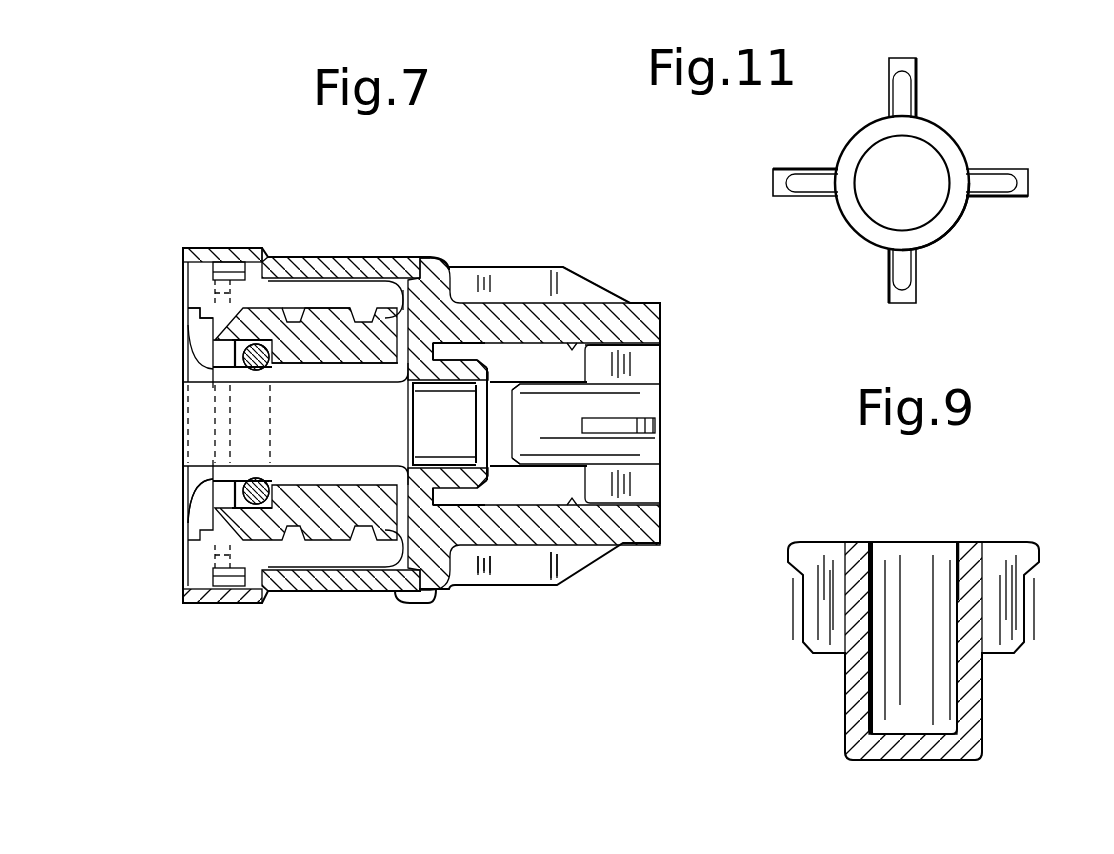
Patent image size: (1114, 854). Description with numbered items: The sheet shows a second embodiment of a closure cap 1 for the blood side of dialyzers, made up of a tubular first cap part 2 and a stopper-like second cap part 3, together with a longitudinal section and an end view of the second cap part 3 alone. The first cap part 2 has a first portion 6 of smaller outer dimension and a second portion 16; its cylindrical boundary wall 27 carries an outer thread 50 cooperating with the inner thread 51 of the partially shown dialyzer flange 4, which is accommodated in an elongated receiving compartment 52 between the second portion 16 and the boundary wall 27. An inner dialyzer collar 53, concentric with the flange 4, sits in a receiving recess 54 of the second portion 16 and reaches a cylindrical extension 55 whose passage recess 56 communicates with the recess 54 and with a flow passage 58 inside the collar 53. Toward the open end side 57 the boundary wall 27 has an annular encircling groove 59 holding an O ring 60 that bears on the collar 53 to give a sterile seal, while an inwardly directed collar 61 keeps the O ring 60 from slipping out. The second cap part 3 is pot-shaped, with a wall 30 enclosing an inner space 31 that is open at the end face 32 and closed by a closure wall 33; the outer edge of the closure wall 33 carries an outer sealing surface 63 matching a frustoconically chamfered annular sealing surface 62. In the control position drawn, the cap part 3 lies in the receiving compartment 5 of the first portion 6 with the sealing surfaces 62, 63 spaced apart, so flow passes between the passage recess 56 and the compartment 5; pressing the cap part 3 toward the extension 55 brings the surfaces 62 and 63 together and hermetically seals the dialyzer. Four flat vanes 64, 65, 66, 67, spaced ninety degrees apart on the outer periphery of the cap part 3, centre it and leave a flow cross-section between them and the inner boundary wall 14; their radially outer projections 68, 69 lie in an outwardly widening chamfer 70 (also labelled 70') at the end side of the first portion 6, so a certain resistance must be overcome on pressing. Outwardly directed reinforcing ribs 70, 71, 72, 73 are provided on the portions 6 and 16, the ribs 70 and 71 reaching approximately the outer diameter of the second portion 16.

In FIG. 7, the closure cap 1 is at (522, 266).
In FIG. 7, the first cap part 2 is at (432, 259).
In FIG. 7, the second cap part 3 is at (666, 383).
In FIG. 11, the second cap part 3 is at (970, 215).
In FIG. 9, the second cap part 3 is at (1042, 597).
In FIG. 7, the dialyzer flange 4 is at (272, 292).
In FIG. 7, the receiving compartment 5 is at (661, 304).
In FIG. 7, the first portion 6 is at (640, 527).
In FIG. 7, the inner boundary wall 14 is at (562, 370).
In FIG. 7, the second portion 16 is at (230, 597).
In FIG. 7, the boundary wall 27 is at (233, 525).
In FIG. 11, the wall 30 is at (945, 138).
In FIG. 9, the wall 30 is at (965, 545).
In FIG. 9, the inner space 31 is at (902, 655).
In FIG. 9, the end face 32 is at (880, 541).
In FIG. 7, the closure wall 33 is at (508, 390).
In FIG. 9, the closure wall 33 is at (920, 740).
In FIG. 7, the outer thread 50 is at (334, 308).
In FIG. 7, the inner thread 51 is at (215, 320).
In FIG. 7, the collar 52 is at (392, 298).
In FIG. 7, the dialyzer collar 53 is at (376, 380).
In FIG. 7, the receiving recess 54 is at (408, 345).
In FIG. 7, the cylindrical extension 55 is at (470, 382).
In FIG. 7, the passage recess 56 is at (422, 446).
In FIG. 7, the open end side 57 is at (180, 422).
In FIG. 7, the flow passage 58 is at (285, 442).
In FIG. 7, the annular encircling groove 59 is at (240, 355).
In FIG. 7, the O ring 60 is at (227, 372).
In FIG. 7, the inwardly directed collar 61 is at (217, 502).
In FIG. 7, the annular sealing surface 62 is at (560, 400).
In FIG. 7, the outer sealing surface 63 is at (503, 462).
In FIG. 9, the outer sealing surface 63 is at (845, 750).
In FIG. 11, the vane 64 is at (900, 84).
In FIG. 11, the vane 65 is at (995, 176).
In FIG. 11, the vane 66 is at (905, 270).
In FIG. 11, the vane 67 is at (800, 176).
In FIG. 9, the projection 68 is at (795, 550).
In FIG. 9, the projection 69 is at (1025, 549).
In FIG. 7, the chamfer 70 is at (552, 589).
In FIG. 7, the hexagonal face 70' is at (665, 345).
In FIG. 7, the reinforcing rib 71 is at (570, 270).
In FIG. 7, the reinforcing rib 72 is at (385, 593).
In FIG. 7, the reinforcing rib 73 is at (310, 258).